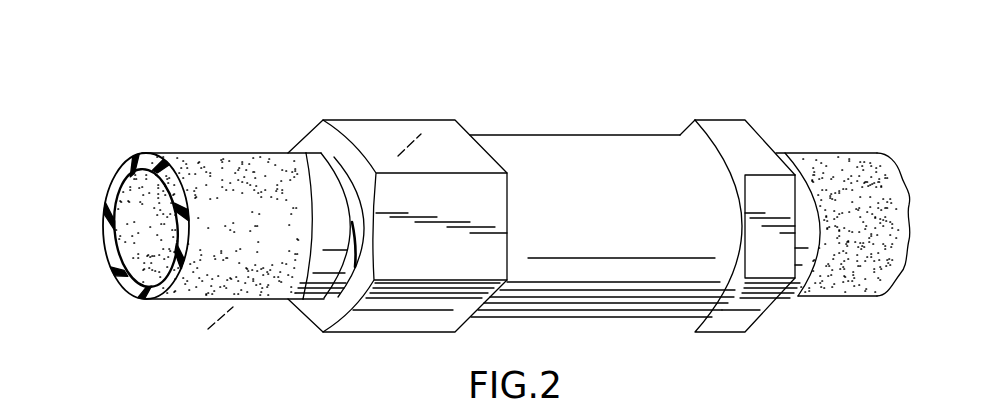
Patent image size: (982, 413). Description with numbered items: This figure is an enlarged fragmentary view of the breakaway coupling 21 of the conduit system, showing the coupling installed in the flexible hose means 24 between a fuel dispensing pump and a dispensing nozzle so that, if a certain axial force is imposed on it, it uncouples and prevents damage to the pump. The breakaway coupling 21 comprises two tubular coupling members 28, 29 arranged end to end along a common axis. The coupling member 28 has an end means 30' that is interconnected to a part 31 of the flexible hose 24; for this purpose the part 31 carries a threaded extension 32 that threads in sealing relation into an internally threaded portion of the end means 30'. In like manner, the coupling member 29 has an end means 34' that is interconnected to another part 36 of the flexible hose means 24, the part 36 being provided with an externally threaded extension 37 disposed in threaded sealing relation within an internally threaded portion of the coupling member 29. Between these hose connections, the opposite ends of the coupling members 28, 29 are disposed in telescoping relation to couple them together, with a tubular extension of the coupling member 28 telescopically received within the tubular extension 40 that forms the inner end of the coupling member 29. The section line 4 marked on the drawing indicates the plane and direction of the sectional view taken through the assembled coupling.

The breakaway coupling 21 is at (640, 90).
The flexible hose means 24 is at (847, 152).
The tubular coupling member 28 is at (364, 120).
The tubular coupling member 29 is at (728, 120).
The end means 30' is at (312, 190).
The part of the flexible hose 31 is at (238, 153).
The threaded extension 32 is at (319, 275).
The end means 34' is at (760, 132).
The part of the flexible hose means 36 is at (855, 297).
The externally threaded extension 37 is at (803, 263).
The tubular extension 40 is at (550, 148).
The section line 4- 4 is at (413, 108).